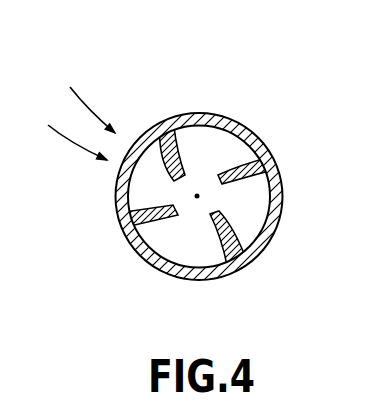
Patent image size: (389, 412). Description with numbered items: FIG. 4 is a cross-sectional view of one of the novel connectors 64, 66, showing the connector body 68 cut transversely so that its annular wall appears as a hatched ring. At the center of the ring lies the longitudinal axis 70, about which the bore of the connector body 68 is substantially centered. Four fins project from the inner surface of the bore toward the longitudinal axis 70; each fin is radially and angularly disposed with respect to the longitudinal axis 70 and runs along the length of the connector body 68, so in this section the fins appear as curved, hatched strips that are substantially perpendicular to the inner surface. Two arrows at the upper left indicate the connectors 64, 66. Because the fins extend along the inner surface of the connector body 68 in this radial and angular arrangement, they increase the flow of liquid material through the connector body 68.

The connector 64 is at (85, 96).
The connector 66 is at (72, 129).
The connector body 68 is at (277, 223).
The longitudinal axis 70 is at (198, 194).